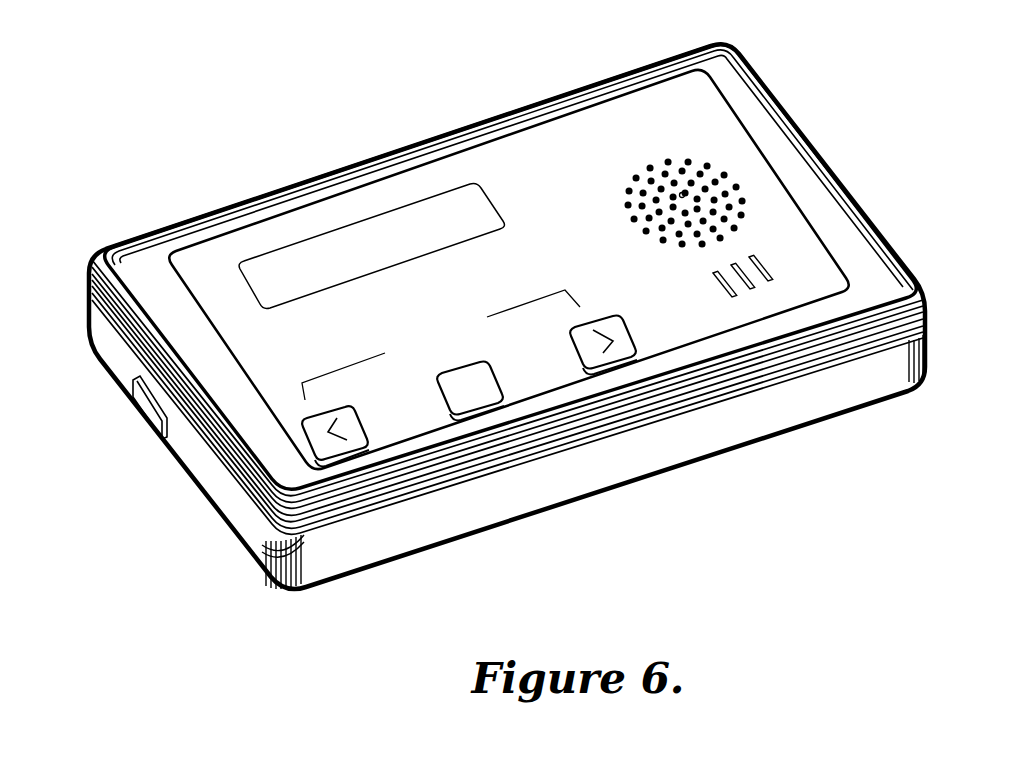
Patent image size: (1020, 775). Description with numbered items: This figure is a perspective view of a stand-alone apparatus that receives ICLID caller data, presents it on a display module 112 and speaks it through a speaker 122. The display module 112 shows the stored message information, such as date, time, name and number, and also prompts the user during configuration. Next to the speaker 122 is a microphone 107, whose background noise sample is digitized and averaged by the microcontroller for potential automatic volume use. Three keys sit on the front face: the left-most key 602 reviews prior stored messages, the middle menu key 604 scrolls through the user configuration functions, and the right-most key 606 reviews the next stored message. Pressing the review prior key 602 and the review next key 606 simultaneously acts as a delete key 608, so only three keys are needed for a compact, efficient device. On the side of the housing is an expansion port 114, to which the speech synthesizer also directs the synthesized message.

The display module 112 is at (493, 200).
The speaker 122 is at (659, 161).
The microphone 107 is at (755, 272).
The review prior key 602 is at (366, 424).
The menu key 604 is at (503, 376).
The review next key 606 is at (638, 327).
The delete key 608 is at (425, 322).
The expansion port 114 is at (147, 410).